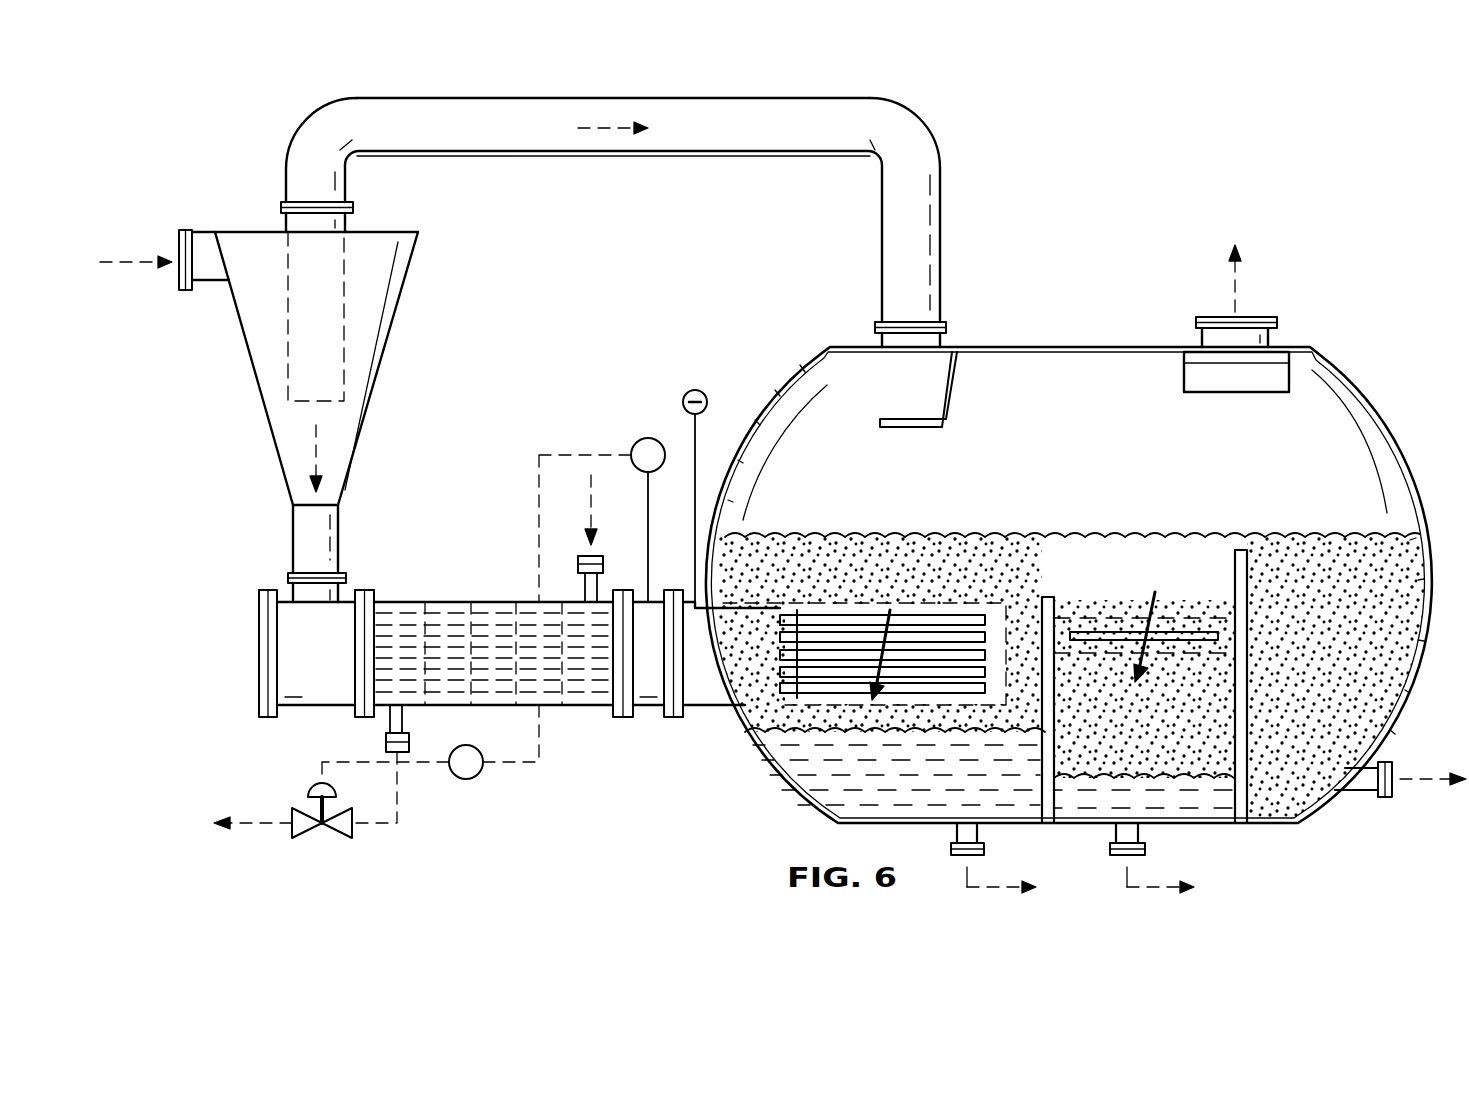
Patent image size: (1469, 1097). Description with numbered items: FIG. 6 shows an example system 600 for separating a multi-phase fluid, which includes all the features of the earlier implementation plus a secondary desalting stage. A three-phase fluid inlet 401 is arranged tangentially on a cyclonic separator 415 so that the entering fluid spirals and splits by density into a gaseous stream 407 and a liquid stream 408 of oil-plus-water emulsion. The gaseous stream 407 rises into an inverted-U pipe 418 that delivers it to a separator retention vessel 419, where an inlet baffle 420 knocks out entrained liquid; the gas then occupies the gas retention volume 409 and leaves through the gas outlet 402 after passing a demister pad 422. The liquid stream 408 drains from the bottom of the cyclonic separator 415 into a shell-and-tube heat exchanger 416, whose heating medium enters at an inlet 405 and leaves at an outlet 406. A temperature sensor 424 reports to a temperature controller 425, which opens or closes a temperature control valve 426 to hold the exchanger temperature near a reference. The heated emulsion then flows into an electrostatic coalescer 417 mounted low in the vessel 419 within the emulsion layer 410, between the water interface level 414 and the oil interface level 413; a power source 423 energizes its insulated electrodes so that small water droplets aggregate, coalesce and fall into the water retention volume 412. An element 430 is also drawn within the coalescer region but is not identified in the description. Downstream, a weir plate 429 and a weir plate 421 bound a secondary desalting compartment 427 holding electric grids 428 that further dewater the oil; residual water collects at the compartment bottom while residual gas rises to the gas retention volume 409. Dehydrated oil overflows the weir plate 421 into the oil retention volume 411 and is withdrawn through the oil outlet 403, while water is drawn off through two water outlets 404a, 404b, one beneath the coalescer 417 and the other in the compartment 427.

The system 600 is at (1152, 90).
The 3-phase fluid inlet 401 is at (205, 232).
The cyclonic separator 415 is at (245, 363).
The liquid stream 408 is at (316, 450).
The pipe 418 is at (485, 97).
The gaseous stream 407 is at (603, 126).
The heat exchanger 416 is at (437, 601).
The inlet 405 is at (582, 585).
The temperature sensor 424 is at (636, 441).
The power source 423 is at (686, 395).
The outlet 406 is at (390, 718).
The temperature controller 425 is at (463, 780).
The temperature control valve 426 is at (312, 788).
The separator retention vessel 419 is at (1075, 346).
The gas outlet 402 is at (1272, 340).
The demister pad 422 is at (1248, 393).
The inlet baffle 420 is at (915, 428).
The gas retention volume 409 is at (1092, 455).
The oil interface level 413 is at (1278, 537).
The emulsion layer 410 is at (917, 585).
The electrostatic coalescer 417 is at (840, 590).
The tube bundle 430 is at (962, 600).
The water interface level 414 is at (760, 722).
The water retention volume 412 is at (935, 790).
The weir plate 429 is at (1056, 607).
The electric grids 428 is at (1175, 617).
The weir plate 421 is at (1250, 585).
The secondary desalting compartment 427 is at (1137, 745).
The oil retention volume 411 is at (1349, 690).
The water outlet 404a is at (985, 838).
The water outlet 404b is at (1142, 838).
The oil outlet 403 is at (1362, 792).